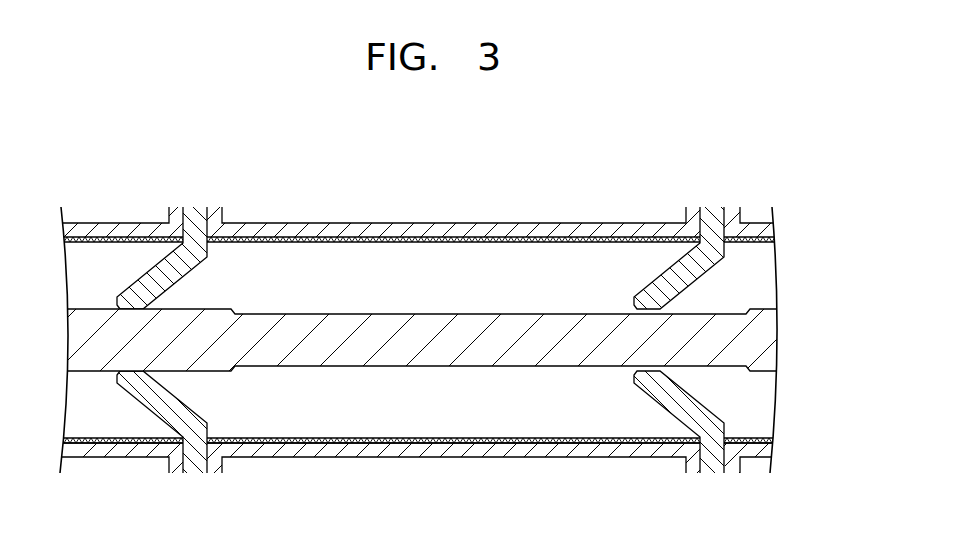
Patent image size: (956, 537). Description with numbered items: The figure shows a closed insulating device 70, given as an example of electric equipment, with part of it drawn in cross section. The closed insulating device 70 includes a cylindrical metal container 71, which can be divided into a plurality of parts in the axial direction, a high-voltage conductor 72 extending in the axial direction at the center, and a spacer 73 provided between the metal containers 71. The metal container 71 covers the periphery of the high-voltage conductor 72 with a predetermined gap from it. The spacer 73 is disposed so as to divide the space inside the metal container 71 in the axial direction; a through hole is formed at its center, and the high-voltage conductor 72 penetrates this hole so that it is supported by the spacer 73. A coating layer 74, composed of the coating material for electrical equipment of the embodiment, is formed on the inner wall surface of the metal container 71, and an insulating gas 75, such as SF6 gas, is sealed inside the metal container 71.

The closed insulating device 70 is at (787, 138).
The metal container 71 is at (480, 234).
The high-voltage conductor 72 is at (323, 342).
The spacer 73 is at (665, 283).
The coating layer 74 is at (403, 236).
The insulating gas 75 is at (489, 413).